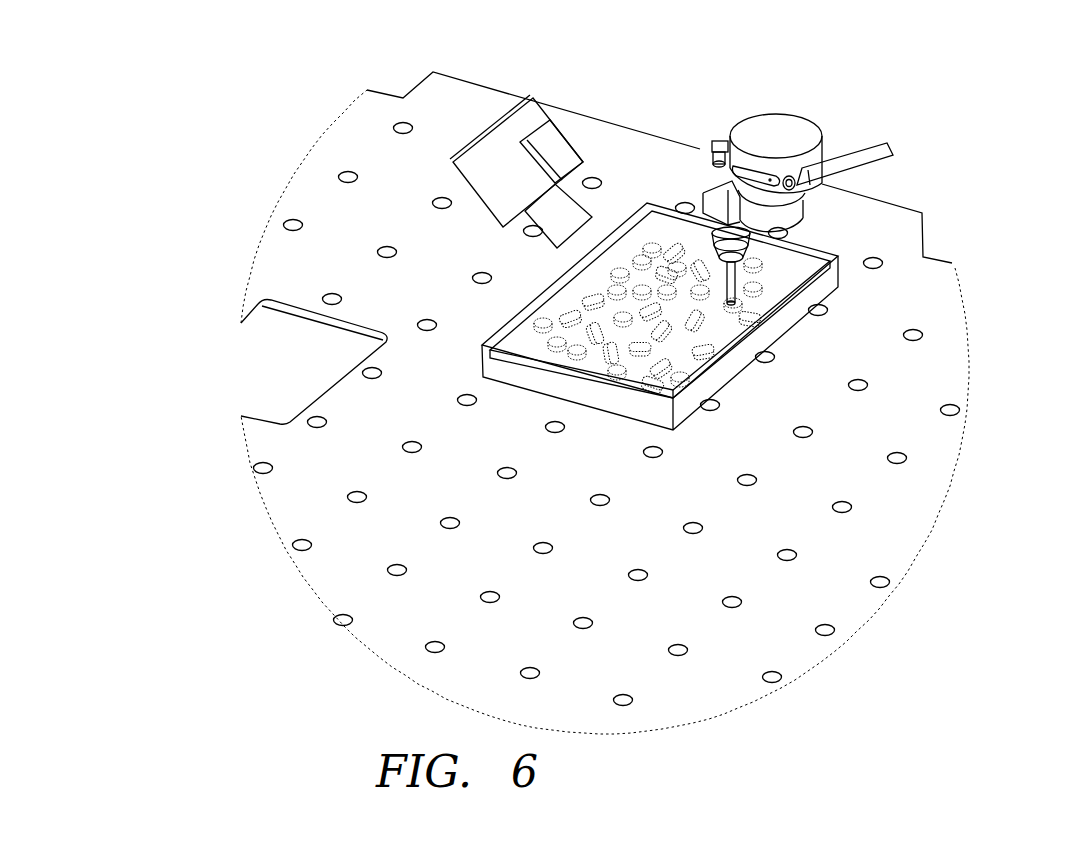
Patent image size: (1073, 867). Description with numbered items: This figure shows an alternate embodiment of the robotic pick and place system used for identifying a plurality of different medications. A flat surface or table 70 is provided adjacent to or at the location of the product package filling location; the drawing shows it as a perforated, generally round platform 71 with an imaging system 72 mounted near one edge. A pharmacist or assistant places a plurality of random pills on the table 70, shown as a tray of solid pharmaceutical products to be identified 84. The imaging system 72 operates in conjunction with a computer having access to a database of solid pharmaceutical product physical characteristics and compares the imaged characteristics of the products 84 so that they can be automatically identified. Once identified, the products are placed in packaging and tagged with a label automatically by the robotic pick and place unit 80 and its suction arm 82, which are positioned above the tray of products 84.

The table 70 is at (635, 372).
The perforated platform 71 is at (530, 303).
The imaging system 72 is at (560, 130).
The robotic pick and place unit 80 is at (820, 128).
The suction arm 82 is at (745, 235).
The solid pharmaceutical products to be identified 84 is at (700, 298).